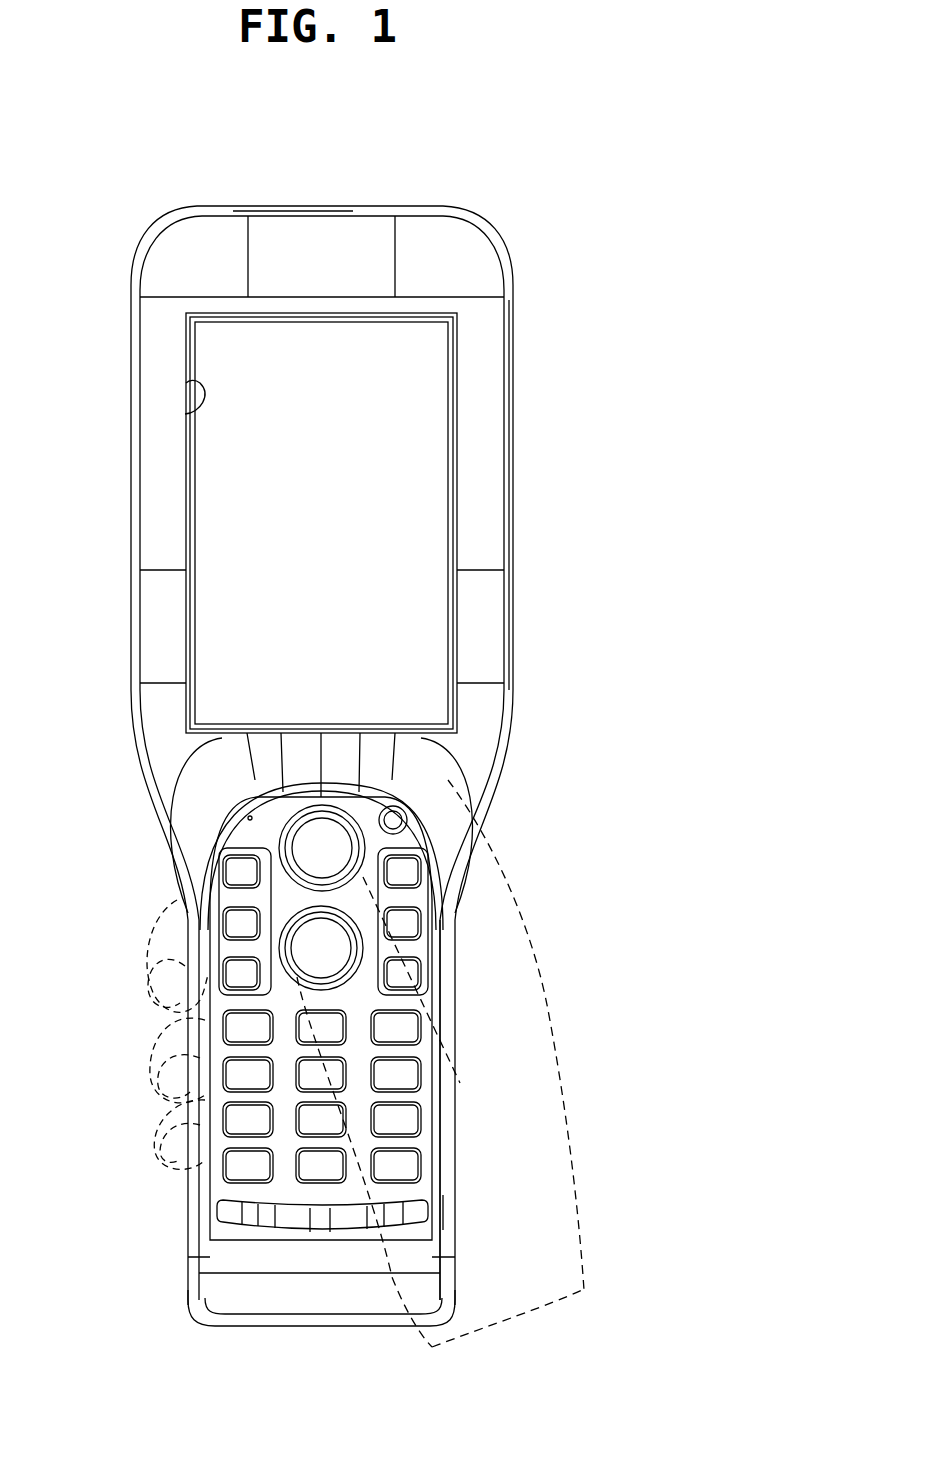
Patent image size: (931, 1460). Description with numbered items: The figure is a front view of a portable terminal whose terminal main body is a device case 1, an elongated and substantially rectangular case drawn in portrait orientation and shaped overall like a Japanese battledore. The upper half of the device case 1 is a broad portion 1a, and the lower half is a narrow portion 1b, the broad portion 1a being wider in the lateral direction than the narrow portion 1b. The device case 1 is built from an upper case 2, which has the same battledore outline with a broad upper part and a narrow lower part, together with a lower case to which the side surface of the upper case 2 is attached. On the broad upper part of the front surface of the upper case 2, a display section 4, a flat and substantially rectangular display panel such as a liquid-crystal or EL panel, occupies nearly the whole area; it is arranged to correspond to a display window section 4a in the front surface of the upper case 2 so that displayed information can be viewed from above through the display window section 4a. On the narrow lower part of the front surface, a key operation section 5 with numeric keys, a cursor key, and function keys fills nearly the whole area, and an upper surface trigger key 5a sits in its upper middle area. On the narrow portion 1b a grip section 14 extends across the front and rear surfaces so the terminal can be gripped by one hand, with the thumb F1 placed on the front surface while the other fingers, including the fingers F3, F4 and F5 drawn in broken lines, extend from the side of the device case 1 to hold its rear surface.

The device case 1 is at (213, 206).
The upper case 2 is at (364, 240).
The display section 4 is at (418, 385).
The display window section 4a is at (185, 414).
The broad portion 1a is at (514, 516).
The narrow portion 1b is at (458, 1041).
The key operation section 5 is at (403, 969).
The upper surface trigger key 5a is at (303, 846).
The grip section 14 is at (443, 1140).
The thumb F1 is at (300, 907).
The finger F3 is at (150, 993).
The finger F4 is at (150, 1084).
The finger F5 is at (152, 1148).